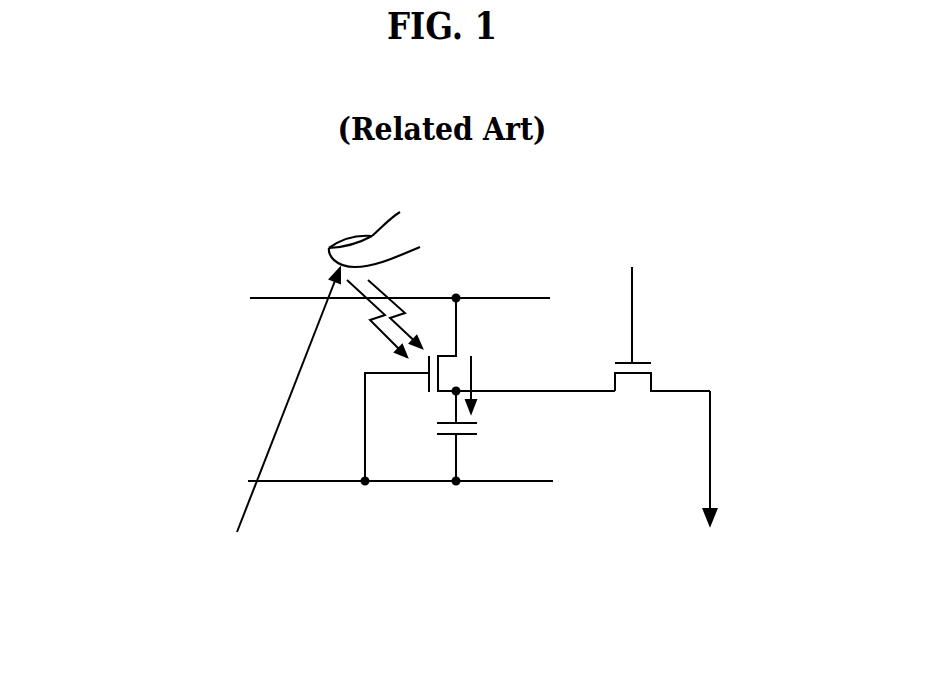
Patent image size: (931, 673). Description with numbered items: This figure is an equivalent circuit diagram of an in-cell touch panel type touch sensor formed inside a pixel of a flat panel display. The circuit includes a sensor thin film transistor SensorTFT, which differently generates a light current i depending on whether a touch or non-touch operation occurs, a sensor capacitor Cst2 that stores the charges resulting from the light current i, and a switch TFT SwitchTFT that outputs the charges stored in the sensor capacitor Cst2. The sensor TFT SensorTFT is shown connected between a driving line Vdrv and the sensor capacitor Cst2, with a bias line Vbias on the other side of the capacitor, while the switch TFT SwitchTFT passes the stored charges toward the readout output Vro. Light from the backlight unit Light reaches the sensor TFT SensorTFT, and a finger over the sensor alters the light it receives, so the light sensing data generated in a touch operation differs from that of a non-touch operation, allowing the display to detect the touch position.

The driving voltage line Vdrv is at (368, 294).
The bias voltage line Vbias is at (364, 477).
The sensor thin film transistor SensorTFT is at (488, 389).
The switch TFT SwitchTFT is at (707, 329).
The storage capacitor Cst2 is at (487, 436).
The light current i is at (478, 387).
The readout voltage output Vro is at (714, 472).
The light from backlight unit Light is at (239, 417).